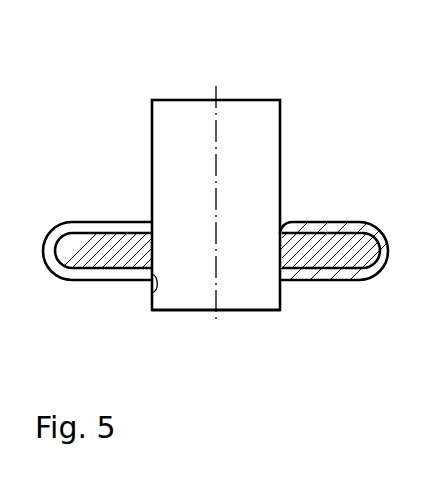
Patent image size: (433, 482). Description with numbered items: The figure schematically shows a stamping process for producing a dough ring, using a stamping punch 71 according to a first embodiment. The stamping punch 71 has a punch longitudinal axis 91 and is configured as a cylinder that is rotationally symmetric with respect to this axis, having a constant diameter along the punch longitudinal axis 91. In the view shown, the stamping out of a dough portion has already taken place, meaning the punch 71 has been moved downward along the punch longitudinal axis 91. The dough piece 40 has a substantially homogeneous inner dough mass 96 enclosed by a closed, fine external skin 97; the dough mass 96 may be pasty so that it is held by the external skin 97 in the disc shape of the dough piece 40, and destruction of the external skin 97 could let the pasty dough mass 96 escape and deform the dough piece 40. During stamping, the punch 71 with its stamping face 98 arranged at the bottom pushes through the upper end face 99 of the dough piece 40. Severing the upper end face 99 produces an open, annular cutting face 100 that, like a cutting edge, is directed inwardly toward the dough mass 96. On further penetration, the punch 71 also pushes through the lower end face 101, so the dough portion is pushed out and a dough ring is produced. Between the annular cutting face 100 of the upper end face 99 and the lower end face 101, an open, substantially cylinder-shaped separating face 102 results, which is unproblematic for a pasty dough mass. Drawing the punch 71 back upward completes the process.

The stamping punch 71 is at (193, 108).
The punch longitudinal axis 91 is at (217, 130).
The upper end face 99 is at (122, 219).
The external skin 97 is at (317, 224).
The dough mass 96 is at (368, 237).
The lower end face 101 is at (233, 265).
The separating face 102 is at (151, 302).
The cutting face 100 is at (152, 257).
The stamping face 98 is at (232, 311).
The dough piece 40 is at (341, 265).